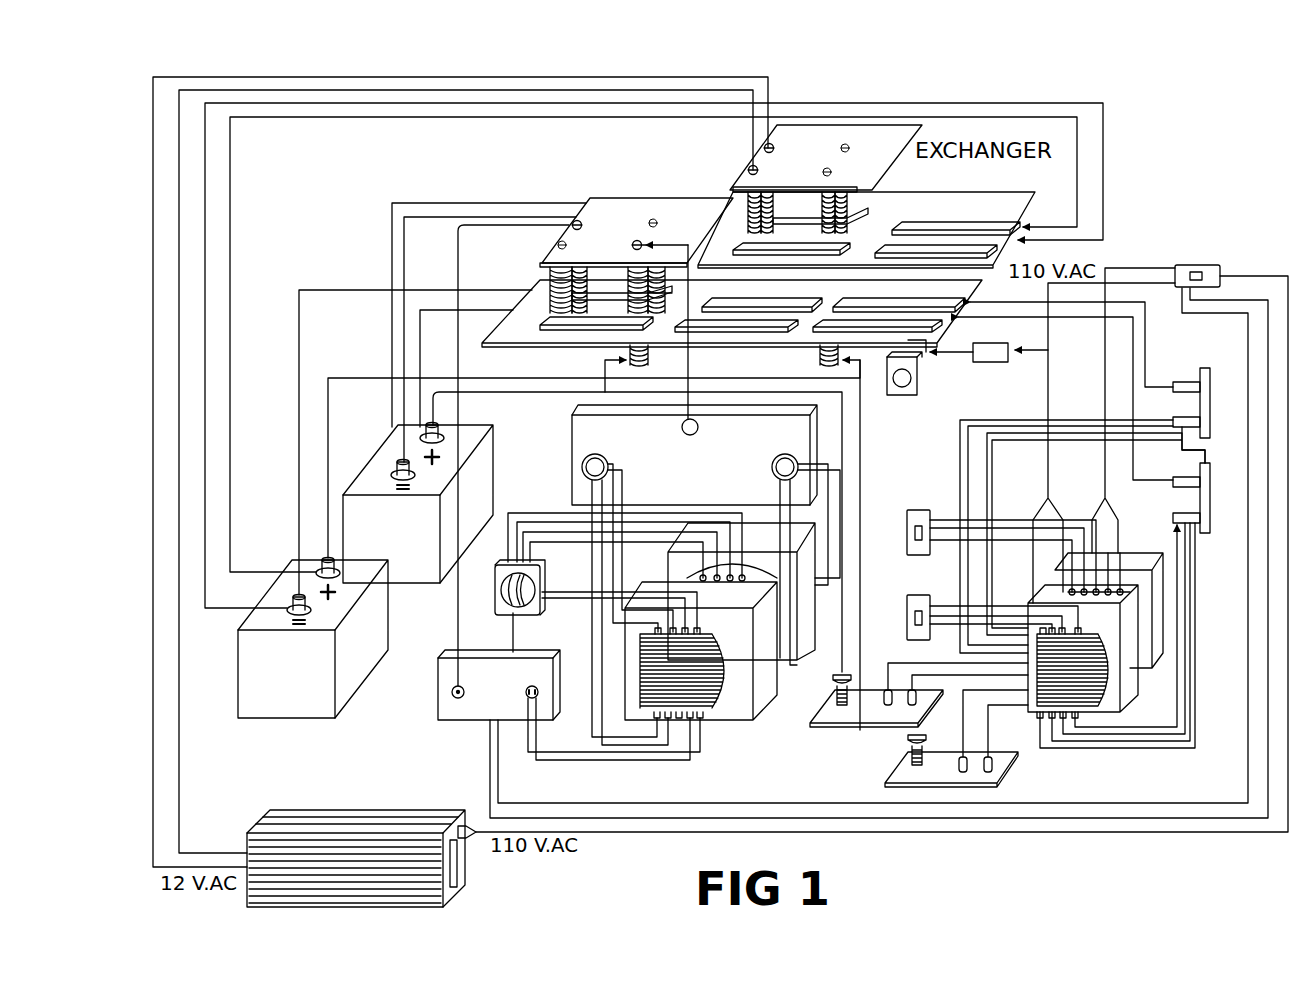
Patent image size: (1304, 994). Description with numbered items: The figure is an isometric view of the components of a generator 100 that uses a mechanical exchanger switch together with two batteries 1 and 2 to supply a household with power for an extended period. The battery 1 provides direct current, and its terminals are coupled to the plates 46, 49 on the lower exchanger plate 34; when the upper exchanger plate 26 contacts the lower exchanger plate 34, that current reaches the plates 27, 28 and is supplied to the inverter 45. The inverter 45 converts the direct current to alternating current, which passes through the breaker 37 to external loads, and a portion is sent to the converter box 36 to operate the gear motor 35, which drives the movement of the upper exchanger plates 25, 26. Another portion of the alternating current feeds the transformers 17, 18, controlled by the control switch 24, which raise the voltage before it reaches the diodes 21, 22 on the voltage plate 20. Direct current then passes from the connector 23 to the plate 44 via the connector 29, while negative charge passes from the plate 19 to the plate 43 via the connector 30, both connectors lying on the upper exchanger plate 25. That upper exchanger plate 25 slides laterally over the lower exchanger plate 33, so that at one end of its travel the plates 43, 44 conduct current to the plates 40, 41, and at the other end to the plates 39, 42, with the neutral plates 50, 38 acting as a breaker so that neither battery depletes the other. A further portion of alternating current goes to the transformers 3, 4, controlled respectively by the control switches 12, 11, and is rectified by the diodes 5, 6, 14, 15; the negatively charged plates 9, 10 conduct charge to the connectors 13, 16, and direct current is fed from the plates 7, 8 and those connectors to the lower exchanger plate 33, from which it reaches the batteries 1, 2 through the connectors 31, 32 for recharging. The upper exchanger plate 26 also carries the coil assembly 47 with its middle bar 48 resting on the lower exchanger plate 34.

The generator 100 is at (1190, 108).
The battery 1 is at (296, 675).
The battery 2 is at (400, 539).
The transformer 3 is at (1132, 688).
The transformer 4 is at (1160, 652).
The diode 5 is at (998, 757).
The diode 6 is at (910, 688).
The plate 7 is at (905, 757).
The plate 8 is at (838, 727).
The negatively charged plate 9 is at (1220, 505).
The negatively charged plate 10 is at (1213, 403).
The control switch 11 is at (918, 510).
The control switch 12 is at (918, 595).
The connector 13 is at (1185, 476).
The diode 14 is at (1183, 512).
The diode 15 is at (1185, 416).
The connector 16 is at (1185, 381).
The transformer 17 is at (630, 673).
The transformer 18 is at (688, 576).
The plate 19 is at (509, 709).
The voltage plate 20 is at (704, 504).
The diode 21 is at (794, 454).
The diode 22 is at (606, 454).
The connector 23 is at (698, 430).
The control switch 24 is at (500, 548).
The upper exchanger plate 25 is at (700, 229).
The upper exchanger plate 26 is at (891, 157).
The plate 27 is at (749, 170).
The plate 28 is at (766, 146).
The connector 29 is at (637, 237).
The connector 30 is at (583, 217).
The connector 31 is at (818, 362).
The connector 32 is at (646, 362).
The lower exchanger plate 33 is at (747, 312).
The lower exchanger plate 34 is at (1020, 207).
The gear motor 35 is at (912, 397).
The converter box 36 is at (990, 362).
The breaker 37 is at (1200, 265).
The neutral plate 38 is at (800, 302).
The plate 39 is at (668, 293).
The plate 40 is at (925, 302).
The plate 41 is at (868, 318).
The plate 42 is at (580, 318).
The plate 43 is at (544, 292).
The plate 44 is at (592, 289).
The inverter 45 is at (465, 857).
The plate 46 is at (927, 243).
The coil 47 is at (786, 245).
The middle bar 48 is at (862, 232).
The plate 49 is at (975, 220).
The neutral plate 50 is at (743, 318).